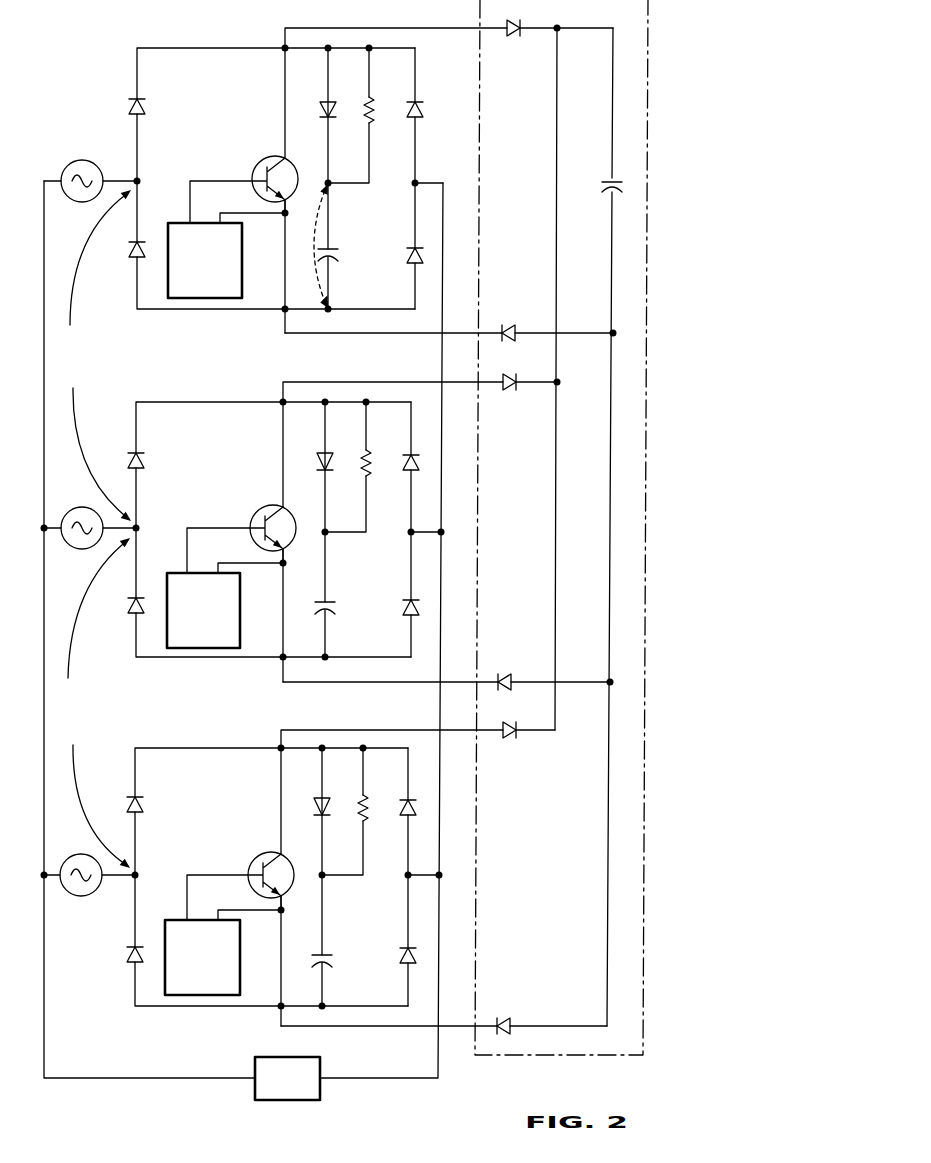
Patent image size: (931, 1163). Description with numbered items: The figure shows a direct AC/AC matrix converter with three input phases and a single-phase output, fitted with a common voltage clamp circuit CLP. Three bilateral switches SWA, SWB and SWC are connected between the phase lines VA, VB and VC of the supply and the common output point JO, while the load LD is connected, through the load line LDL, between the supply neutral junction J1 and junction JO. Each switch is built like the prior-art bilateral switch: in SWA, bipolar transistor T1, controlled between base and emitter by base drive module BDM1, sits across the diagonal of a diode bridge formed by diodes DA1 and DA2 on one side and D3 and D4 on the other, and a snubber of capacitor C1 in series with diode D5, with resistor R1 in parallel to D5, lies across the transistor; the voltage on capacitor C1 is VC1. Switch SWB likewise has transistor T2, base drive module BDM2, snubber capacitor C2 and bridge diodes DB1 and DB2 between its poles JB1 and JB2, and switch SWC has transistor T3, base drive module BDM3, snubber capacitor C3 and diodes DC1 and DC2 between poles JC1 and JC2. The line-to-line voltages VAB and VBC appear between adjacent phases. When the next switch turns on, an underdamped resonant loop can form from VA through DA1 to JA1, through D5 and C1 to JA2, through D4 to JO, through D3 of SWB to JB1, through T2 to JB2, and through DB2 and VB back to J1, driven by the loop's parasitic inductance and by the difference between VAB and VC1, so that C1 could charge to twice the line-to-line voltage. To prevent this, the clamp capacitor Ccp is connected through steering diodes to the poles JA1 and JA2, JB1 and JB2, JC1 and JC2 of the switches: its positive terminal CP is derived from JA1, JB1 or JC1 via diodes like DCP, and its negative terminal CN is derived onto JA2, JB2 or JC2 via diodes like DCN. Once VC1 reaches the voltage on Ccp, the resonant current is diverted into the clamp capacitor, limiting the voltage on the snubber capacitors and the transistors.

The nodal point JA1 is at (284, 44).
The steering diode DCP is at (512, 22).
The diode DA1 is at (128, 103).
The diode A2 DA2 is at (130, 248).
The bilateral switch SWA is at (235, 117).
The diode D5 is at (320, 119).
The resistor R1 is at (373, 106).
The diode D3 is at (421, 104).
The diode D4 is at (406, 255).
The phase voltage VA is at (129, 178).
The bipolar transistor T1 is at (254, 168).
The base drive module BDM1 is at (205, 309).
The voltage on capacitor C1 VC1 is at (309, 246).
The capacitor C1 is at (330, 262).
The steering diode DCN is at (510, 325).
The negative terminal CN is at (613, 333).
The clamp capacitor Ccp is at (604, 186).
The nodal point JA2 is at (283, 312).
The line-to-line voltage VAB is at (95, 355).
The nodal point JB1 is at (282, 398).
The positive terminal CP is at (558, 384).
The diode B1 DB1 is at (128, 455).
The bilateral switch SWB is at (230, 469).
The phase voltage VB is at (113, 527).
The bipolar transistor T2 is at (257, 507).
The diode DB2 is at (128, 601).
The base drive module BDM2 is at (204, 657).
The capacitor C2 is at (335, 607).
The nodal point JB2 is at (281, 664).
The line voltage B-C VBC is at (95, 703).
The nodal point JC1 is at (280, 744).
The diode C1 DC1 is at (127, 803).
The bilateral switch SWC is at (224, 807).
The junction J1 is at (44, 875).
The phase voltage VC is at (110, 882).
The bipolar transistor T3 is at (257, 857).
The diode C2 DC2 is at (125, 955).
The base drive module BDM3 is at (190, 1007).
The capacitor C3 is at (332, 960).
The nodal point JC2 is at (279, 1012).
The junction JO is at (441, 878).
The clamp circuit CLP is at (699, 608).
The load LD is at (310, 1100).
The load line LDL is at (127, 1080).